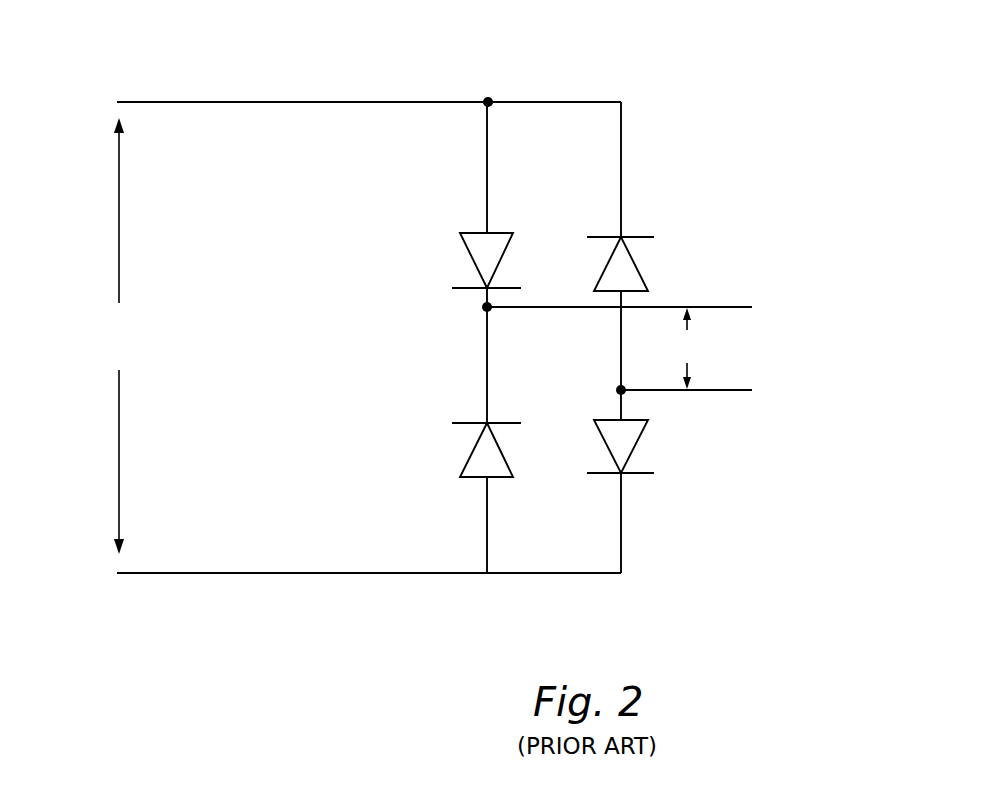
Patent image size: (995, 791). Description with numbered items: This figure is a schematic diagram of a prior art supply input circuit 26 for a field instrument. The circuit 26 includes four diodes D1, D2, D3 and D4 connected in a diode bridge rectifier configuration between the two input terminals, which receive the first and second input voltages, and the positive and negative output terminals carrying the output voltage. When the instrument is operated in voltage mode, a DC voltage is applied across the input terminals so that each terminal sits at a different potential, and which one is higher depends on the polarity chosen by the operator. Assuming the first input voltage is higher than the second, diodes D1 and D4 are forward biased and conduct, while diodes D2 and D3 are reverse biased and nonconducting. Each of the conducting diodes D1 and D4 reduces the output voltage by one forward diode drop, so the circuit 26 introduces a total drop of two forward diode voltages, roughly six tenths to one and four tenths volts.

The supply input circuit 26 is at (438, 316).
The diode D1 is at (463, 260).
The diode D2 is at (644, 264).
The diode D3 is at (463, 450).
The diode D4 is at (644, 446).